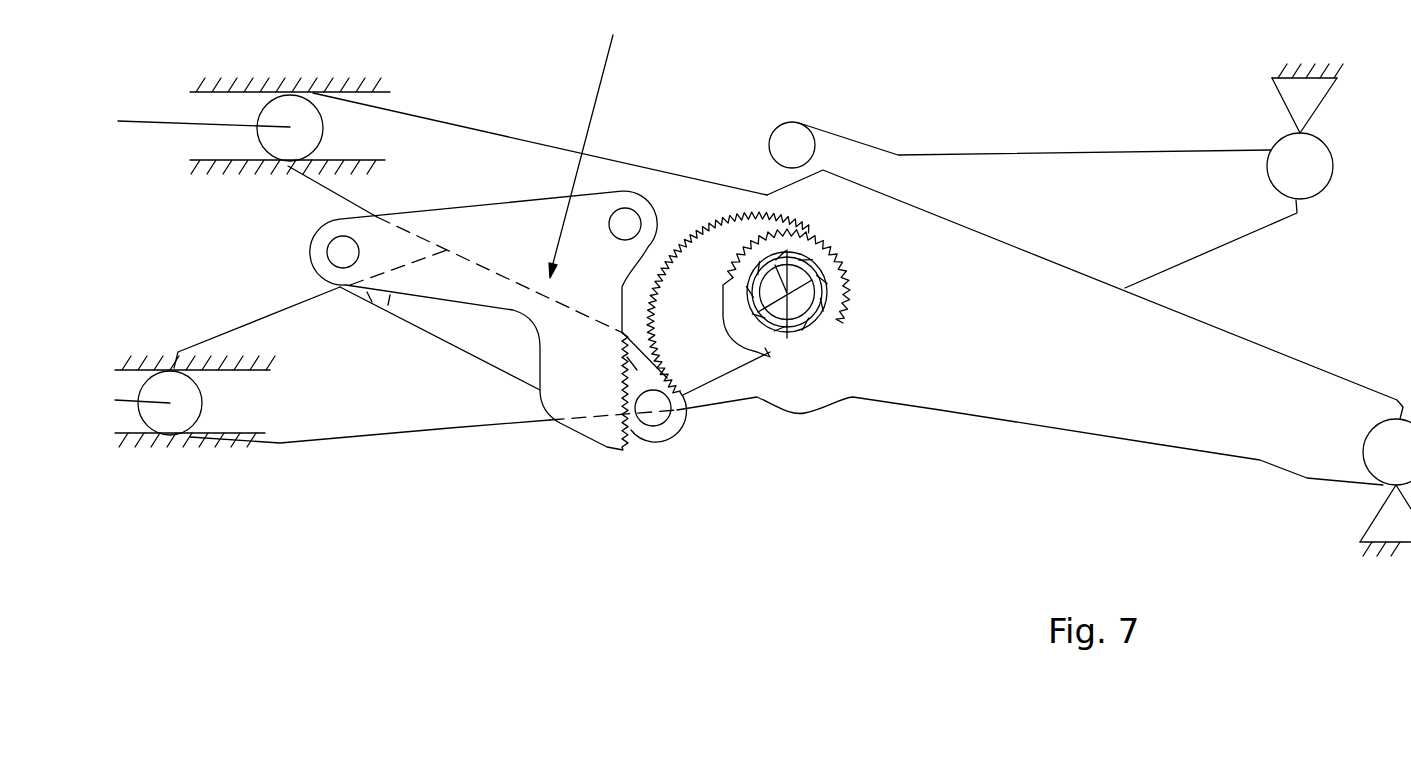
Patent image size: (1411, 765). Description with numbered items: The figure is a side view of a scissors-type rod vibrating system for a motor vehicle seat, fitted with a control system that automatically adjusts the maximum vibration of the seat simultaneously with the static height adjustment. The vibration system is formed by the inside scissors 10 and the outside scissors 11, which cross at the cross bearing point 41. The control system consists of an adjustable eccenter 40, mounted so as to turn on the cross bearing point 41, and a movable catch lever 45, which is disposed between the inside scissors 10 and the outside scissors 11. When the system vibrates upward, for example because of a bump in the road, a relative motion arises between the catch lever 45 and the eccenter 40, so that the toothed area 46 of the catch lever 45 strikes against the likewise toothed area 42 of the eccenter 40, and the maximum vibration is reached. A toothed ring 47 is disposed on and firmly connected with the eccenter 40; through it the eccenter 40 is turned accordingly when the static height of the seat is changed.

The inside scissors 10 is at (1013, 170).
The outside scissors 11 is at (1107, 423).
The adjustable eccenter 40 is at (672, 343).
The cross bearing point 41 is at (787, 292).
The toothed area of the eccenter 42 is at (717, 220).
The catch lever 45 is at (672, 152).
The toothed area of the catch lever 46 is at (627, 413).
The toothed ring 47 is at (820, 253).